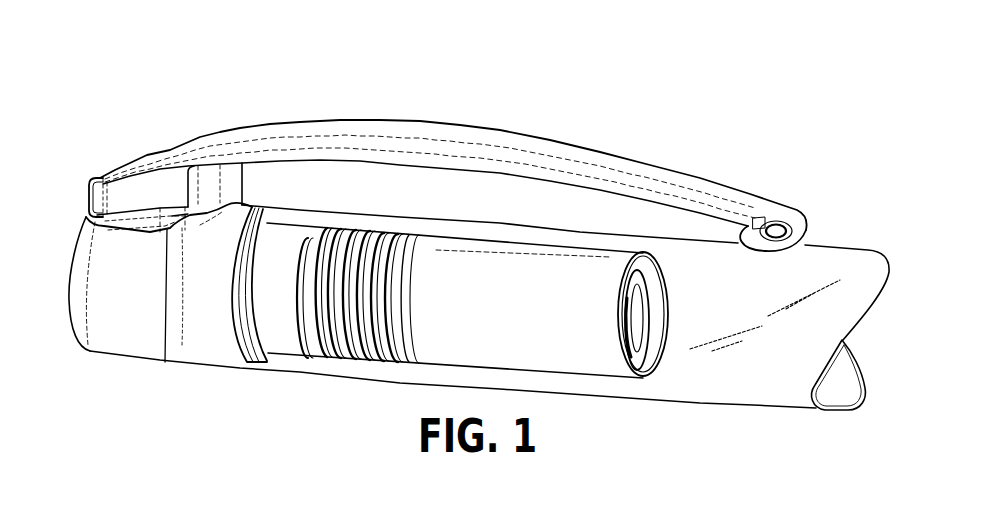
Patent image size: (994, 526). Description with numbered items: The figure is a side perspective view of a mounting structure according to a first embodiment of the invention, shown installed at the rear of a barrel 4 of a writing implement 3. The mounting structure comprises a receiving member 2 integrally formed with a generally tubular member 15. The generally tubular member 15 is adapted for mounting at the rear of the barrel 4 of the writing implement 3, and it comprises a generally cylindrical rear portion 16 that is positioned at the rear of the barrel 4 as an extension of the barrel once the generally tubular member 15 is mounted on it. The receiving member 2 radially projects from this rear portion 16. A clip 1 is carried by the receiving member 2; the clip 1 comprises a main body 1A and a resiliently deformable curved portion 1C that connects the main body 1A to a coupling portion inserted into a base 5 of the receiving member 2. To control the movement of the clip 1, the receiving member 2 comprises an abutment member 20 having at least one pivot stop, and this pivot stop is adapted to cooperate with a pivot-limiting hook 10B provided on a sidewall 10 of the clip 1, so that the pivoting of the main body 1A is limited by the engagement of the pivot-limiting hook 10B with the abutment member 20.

The clip 1 is at (312, 77).
The main body 1A is at (643, 177).
The resiliently deformable curved portion 1C is at (88, 190).
The receiving member 2 is at (278, 176).
The writing implement 3 is at (858, 222).
The barrel 4 is at (762, 424).
The base 5 is at (120, 234).
The sidewall 10 is at (155, 183).
The pivot-limiting hook 10B is at (172, 215).
The generally tubular member 15 is at (583, 347).
The generally cylindrical rear portion 16 is at (217, 340).
The abutment member 20 is at (213, 180).